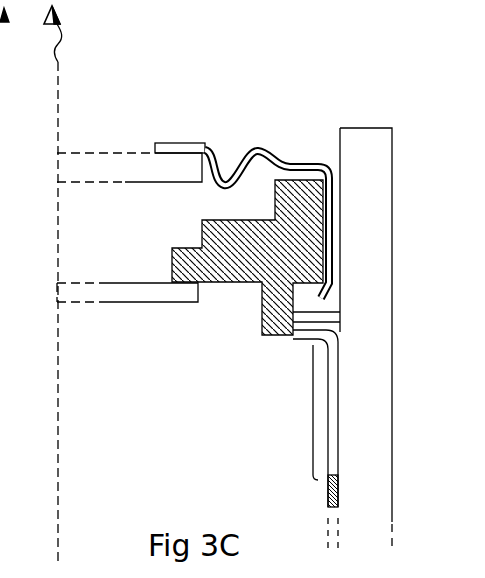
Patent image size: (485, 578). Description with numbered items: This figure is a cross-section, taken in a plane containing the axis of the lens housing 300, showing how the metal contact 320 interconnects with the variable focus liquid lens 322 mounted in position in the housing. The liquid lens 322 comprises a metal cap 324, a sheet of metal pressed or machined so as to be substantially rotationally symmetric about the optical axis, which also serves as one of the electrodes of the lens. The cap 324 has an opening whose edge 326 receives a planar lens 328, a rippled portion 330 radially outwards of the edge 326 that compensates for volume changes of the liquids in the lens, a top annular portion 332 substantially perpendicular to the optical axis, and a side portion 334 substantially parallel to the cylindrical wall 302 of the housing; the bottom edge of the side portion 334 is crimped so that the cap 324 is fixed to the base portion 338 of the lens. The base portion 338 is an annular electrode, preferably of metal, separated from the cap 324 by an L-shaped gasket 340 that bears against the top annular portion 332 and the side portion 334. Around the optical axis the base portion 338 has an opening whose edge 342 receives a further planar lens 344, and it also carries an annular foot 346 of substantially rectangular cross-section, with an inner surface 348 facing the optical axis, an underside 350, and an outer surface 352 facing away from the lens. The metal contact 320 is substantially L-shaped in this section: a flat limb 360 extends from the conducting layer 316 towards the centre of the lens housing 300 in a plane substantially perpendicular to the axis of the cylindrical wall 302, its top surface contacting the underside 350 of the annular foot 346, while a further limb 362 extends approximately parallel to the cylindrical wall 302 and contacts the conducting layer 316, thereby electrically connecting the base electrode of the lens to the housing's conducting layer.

The lens housing 300 is at (366, 92).
The cylindrical wall 302 is at (385, 236).
The conducting layer 316 is at (328, 488).
The metal contact 320 is at (328, 429).
The liquid lens 322 is at (126, 128).
The metal cap 324 is at (213, 184).
The edge 326 is at (182, 143).
The planar lens 328 is at (150, 178).
The rippled portion 330 is at (273, 143).
The top annular portion 332 is at (321, 160).
The side portion 334 is at (336, 191).
The base portion 338 is at (213, 232).
The L-shaped gasket 340 is at (327, 228).
The edge 342 is at (218, 286).
The further planar lens 344 is at (120, 290).
The annular foot 346 is at (340, 307).
The inner surface 348 is at (262, 300).
The underside 350 is at (275, 339).
The outer surface 352 is at (340, 322).
The limb 360 is at (292, 340).
The further limb 362 is at (312, 414).